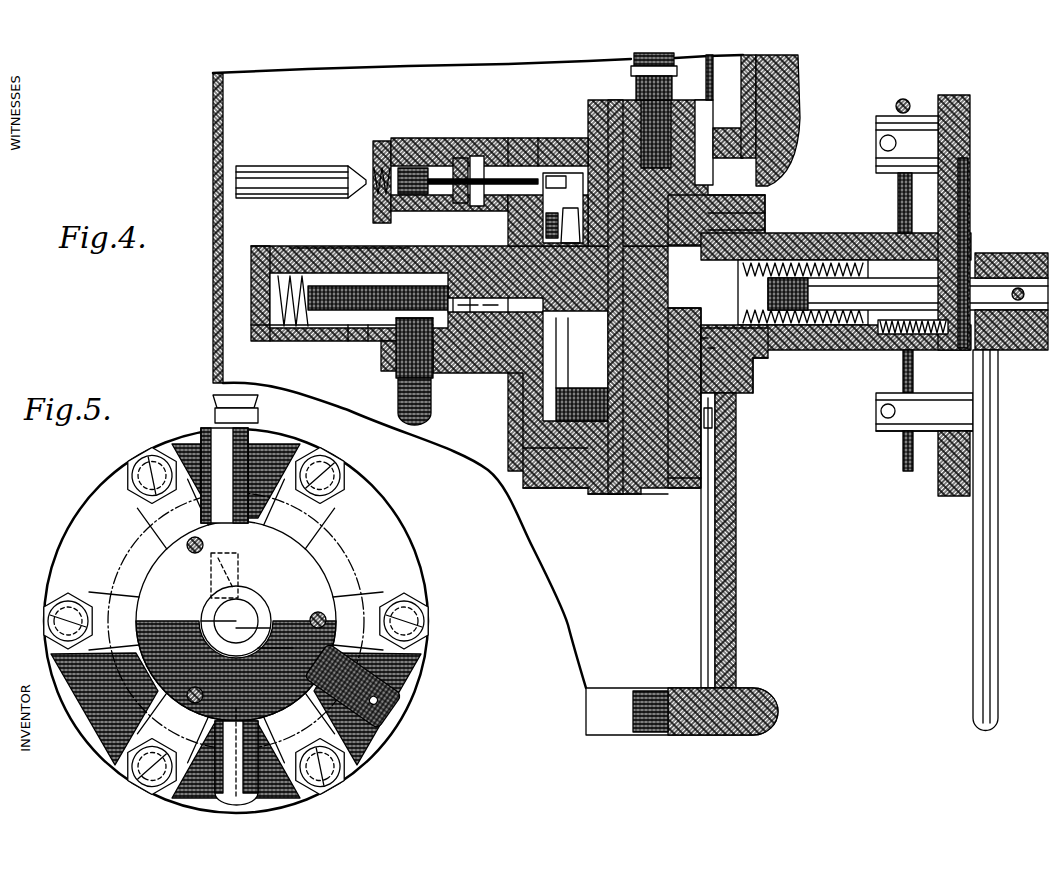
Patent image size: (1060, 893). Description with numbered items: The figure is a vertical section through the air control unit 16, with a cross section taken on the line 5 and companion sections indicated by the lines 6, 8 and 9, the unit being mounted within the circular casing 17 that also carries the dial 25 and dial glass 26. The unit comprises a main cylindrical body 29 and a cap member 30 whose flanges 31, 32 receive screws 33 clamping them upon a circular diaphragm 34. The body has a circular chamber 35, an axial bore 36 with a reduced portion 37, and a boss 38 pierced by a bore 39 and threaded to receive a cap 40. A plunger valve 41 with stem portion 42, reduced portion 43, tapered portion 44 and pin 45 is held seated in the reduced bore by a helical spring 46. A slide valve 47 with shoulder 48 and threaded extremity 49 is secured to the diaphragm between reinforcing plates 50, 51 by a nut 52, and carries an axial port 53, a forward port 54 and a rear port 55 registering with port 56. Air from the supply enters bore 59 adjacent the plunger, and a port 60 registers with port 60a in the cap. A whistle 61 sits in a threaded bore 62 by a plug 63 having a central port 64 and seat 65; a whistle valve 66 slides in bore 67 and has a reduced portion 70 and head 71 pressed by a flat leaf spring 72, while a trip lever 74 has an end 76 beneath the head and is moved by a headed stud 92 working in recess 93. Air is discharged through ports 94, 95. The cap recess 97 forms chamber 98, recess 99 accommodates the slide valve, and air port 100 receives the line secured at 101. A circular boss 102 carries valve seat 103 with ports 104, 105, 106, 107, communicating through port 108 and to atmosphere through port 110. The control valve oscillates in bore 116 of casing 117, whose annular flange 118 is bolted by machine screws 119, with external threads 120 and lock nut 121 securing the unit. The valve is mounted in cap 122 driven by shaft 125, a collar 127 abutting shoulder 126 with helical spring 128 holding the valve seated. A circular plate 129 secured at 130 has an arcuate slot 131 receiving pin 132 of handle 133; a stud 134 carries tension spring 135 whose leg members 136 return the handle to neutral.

In FIG. 4, the section line 5— 5 is at (690, 90).
In FIG. 4, the section line 6- 6 is at (591, 84).
In FIG. 5, the section line 8- 8 is at (450, 613).
In FIG. 5, the section line 9- 9 is at (445, 737).
In FIG. 4, the air control unit 16 is at (507, 128).
In FIG. 4, the circular casing 17 is at (735, 524).
In FIG. 4, the dial 25 is at (705, 68).
In FIG. 4, the dial glass 26 is at (792, 72).
In FIG. 4, the main cylindrical body 29 is at (530, 470).
In FIG. 4, the cap member 30 is at (695, 455).
In FIG. 5, the cap member 30 is at (228, 790).
In FIG. 4, the flange 31 is at (580, 483).
In FIG. 4, the flange 32 is at (640, 488).
In FIG. 5, the flange 32 is at (350, 492).
In FIG. 5, the screws 33 is at (140, 446).
In FIG. 4, the circular diaphragm 34 is at (512, 408).
In FIG. 4, the circular chamber 35 is at (505, 330).
In FIG. 4, the axial bore 36 is at (452, 305).
In FIG. 4, the reduced portion 37 is at (400, 262).
In FIG. 4, the boss 38 is at (332, 245).
In FIG. 4, the bore 39 is at (300, 326).
In FIG. 4, the cap 40 is at (250, 248).
In FIG. 4, the plunger valve 41 is at (306, 278).
In FIG. 4, the stem portion 42 is at (262, 285).
In FIG. 4, the reduced portion 43 is at (340, 326).
In FIG. 4, the tapered portion 44 is at (360, 326).
In FIG. 4, the pin 45 is at (445, 305).
In FIG. 4, the helical spring 46 is at (276, 266).
In FIG. 4, the slide valve 47 is at (495, 304).
In FIG. 4, the concentric shoulder 48 is at (562, 360).
In FIG. 4, the threaded extremity 49 is at (610, 488).
In FIG. 4, the reinforcing plate 50 is at (590, 390).
In FIG. 4, the reinforcing plate 51 is at (715, 400).
In FIG. 4, the nut 52 is at (735, 395).
In FIG. 4, the axial port 53 is at (478, 305).
In FIG. 4, the port 54 is at (463, 305).
In FIG. 4, the port 55 is at (556, 355).
In FIG. 4, the port 56 is at (610, 380).
In FIG. 4, the bore 59 is at (386, 336).
In FIG. 4, the port 60 is at (515, 442).
In FIG. 4, the port 60a is at (665, 473).
In FIG. 5, the port 60a is at (305, 652).
In FIG. 4, the audible signal 61 is at (262, 166).
In FIG. 4, the threaded bore 62 is at (400, 130).
In FIG. 4, the threaded plug 63 is at (372, 133).
In FIG. 4, the central port 64 is at (430, 160).
In FIG. 4, the seat 65 is at (450, 150).
In FIG. 4, the whistle valve 66 is at (466, 148).
In FIG. 4, the bore 67 is at (516, 128).
In FIG. 4, the reduced portion 70 is at (554, 186).
In FIG. 4, the head 71 is at (548, 165).
In FIG. 4, the flat leaf spring 72 is at (560, 150).
In FIG. 4, the trip lever 74 is at (572, 230).
In FIG. 4, the end 76 is at (545, 227).
In FIG. 4, the headed stud 92 is at (770, 230).
In FIG. 4, the recess 93 is at (530, 150).
In FIG. 4, the air port 94 is at (395, 382).
In FIG. 4, the port 95 is at (376, 350).
In FIG. 4, the recess 97 is at (702, 440).
In FIG. 4, the chamber 98 is at (704, 420).
In FIG. 5, the chamber 98 is at (380, 510).
In FIG. 4, the recess 99 is at (735, 222).
In FIG. 4, the air port 100 is at (650, 130).
In FIG. 5, the air port 100 is at (210, 432).
In FIG. 4, the securement of air line 101 is at (624, 65).
In FIG. 5, the securement of air line 101 is at (250, 408).
In FIG. 4, the circular boss 102 is at (718, 198).
In FIG. 4, the valve seat 103 is at (745, 233).
In FIG. 5, the valve seat 103 is at (250, 605).
In FIG. 4, the air port 104 is at (757, 370).
In FIG. 5, the air port 104 is at (192, 612).
In FIG. 5, the air port 105 is at (262, 621).
In FIG. 4, the air port 106 is at (840, 232).
In FIG. 5, the air port 106 is at (262, 613).
In FIG. 4, the air port 107 is at (790, 235).
In FIG. 5, the air port 107 is at (236, 590).
In FIG. 5, the port 108 is at (280, 640).
In FIG. 4, the port 110 is at (692, 205).
In FIG. 5, the port 110 is at (216, 560).
In FIG. 4, the bore 116 is at (868, 400).
In FIG. 4, the casing 117 is at (860, 235).
In FIG. 4, the annular flange 118 is at (700, 140).
In FIG. 5, the machine screws 119 is at (183, 530).
In FIG. 4, the external screw threads 120 is at (755, 355).
In FIG. 4, the lock nut 121 is at (740, 378).
In FIG. 4, the cap 122 is at (755, 340).
In FIG. 4, the shaft 125 is at (985, 247).
In FIG. 4, the shoulder 126 is at (850, 327).
In FIG. 4, the collar 127 is at (860, 286).
In FIG. 4, the helical spring 128 is at (898, 352).
In FIG. 4, the circular plate 129 is at (962, 110).
In FIG. 4, the securement of plate 130 is at (962, 215).
In FIG. 4, the arcuate slot 131 is at (935, 465).
In FIG. 4, the pin 132 is at (870, 422).
In FIG. 4, the handle 133 is at (975, 530).
In FIG. 4, the stud 134 is at (905, 118).
In FIG. 4, the tension spring 135 is at (888, 97).
In FIG. 4, the leg members 136 is at (897, 455).